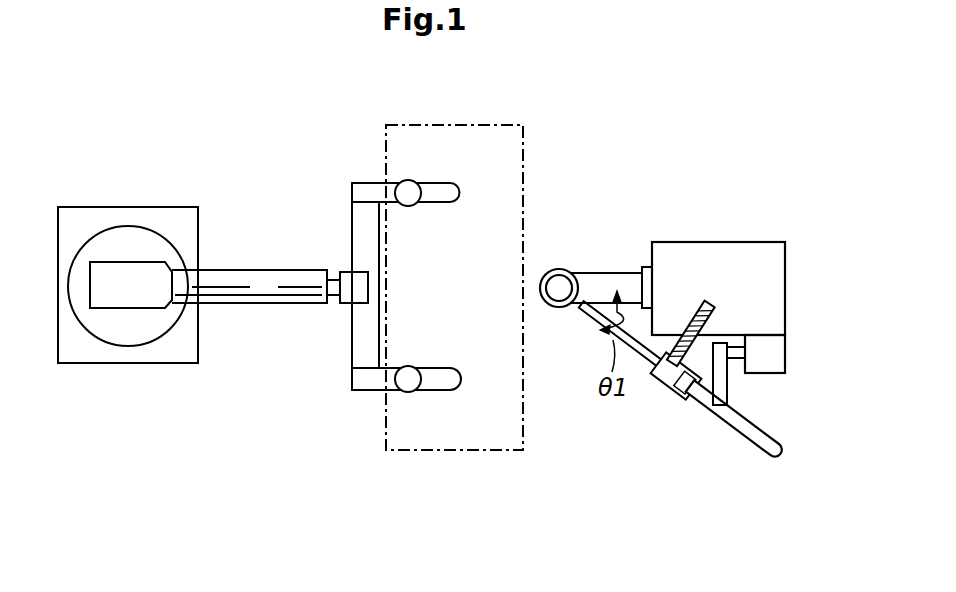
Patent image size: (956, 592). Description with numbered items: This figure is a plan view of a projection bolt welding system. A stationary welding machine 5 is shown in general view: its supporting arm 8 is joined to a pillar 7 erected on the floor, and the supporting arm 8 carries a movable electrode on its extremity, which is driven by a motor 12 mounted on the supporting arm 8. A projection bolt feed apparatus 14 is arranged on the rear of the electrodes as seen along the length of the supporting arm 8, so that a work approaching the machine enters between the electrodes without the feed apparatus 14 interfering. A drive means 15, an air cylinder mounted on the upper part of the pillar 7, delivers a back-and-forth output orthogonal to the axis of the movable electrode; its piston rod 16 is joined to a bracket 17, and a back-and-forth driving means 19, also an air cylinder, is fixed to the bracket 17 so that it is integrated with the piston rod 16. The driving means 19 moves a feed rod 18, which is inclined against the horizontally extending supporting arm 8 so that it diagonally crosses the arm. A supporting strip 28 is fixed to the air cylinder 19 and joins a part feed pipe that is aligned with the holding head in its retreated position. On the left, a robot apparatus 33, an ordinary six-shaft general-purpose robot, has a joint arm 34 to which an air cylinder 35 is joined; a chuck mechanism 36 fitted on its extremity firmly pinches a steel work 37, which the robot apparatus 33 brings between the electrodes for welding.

The stationary welding machine 5 is at (797, 287).
The pillar 7 is at (704, 241).
The supporting arm 8 is at (614, 272).
The motor 12 is at (562, 269).
The projection bolt feed apparatus 14 is at (621, 412).
The drive means 15 is at (785, 356).
The piston rod 16 is at (734, 345).
The bracket 17 is at (728, 394).
The feed rod 18 is at (590, 309).
The back-and-forth driving means 19 is at (745, 437).
The supporting strip 28 is at (664, 388).
The robot apparatus 33 is at (161, 193).
The joint arm 34 is at (128, 308).
The air cylinder 35 is at (256, 268).
The chuck mechanism 36 is at (377, 176).
The work 37 is at (386, 420).